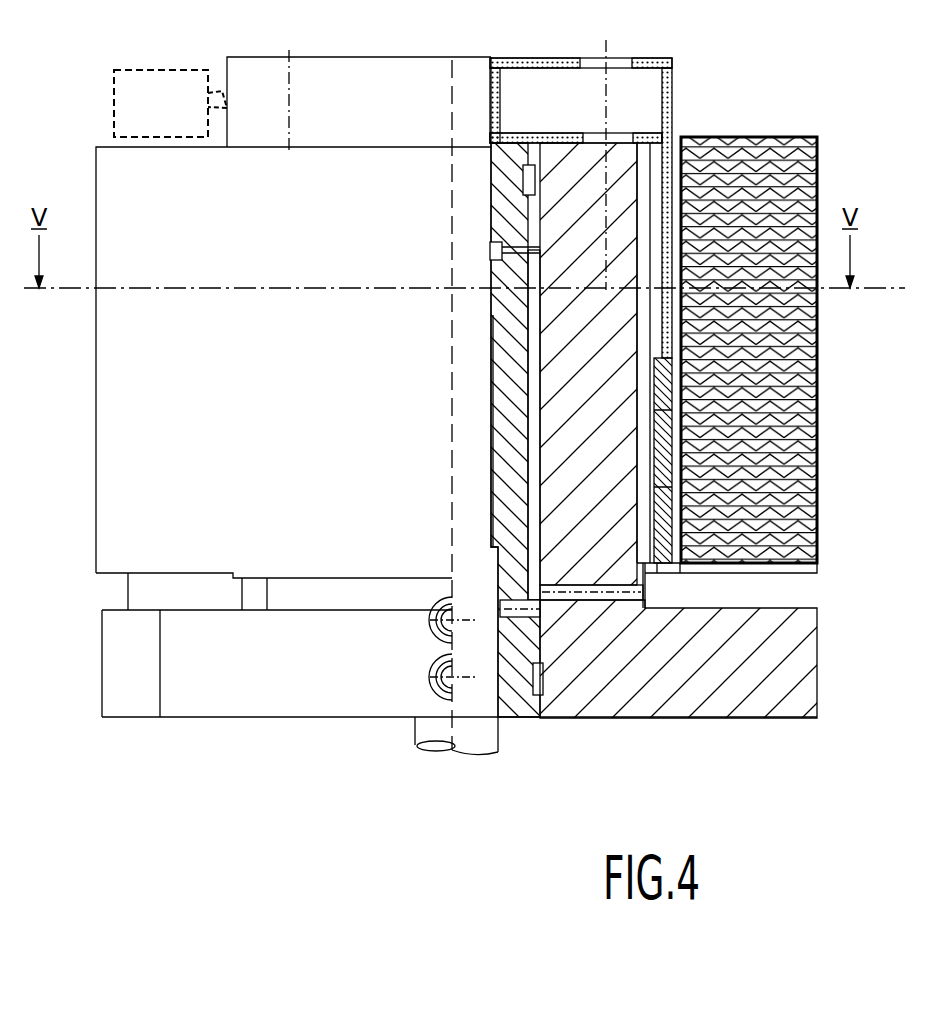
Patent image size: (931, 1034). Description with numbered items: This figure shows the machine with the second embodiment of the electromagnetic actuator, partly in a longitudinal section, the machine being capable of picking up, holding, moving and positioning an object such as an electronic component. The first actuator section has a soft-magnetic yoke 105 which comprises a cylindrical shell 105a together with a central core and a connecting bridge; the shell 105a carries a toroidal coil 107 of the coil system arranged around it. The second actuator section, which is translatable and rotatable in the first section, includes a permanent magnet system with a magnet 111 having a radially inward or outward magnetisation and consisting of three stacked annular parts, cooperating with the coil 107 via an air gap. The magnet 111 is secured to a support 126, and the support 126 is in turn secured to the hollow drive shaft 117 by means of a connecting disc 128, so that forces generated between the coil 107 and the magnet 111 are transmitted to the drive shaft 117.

The soft-magnetic yoke 105 is at (729, 705).
The cylindrical shell 105a is at (764, 514).
The toroidal coil 107 is at (662, 234).
The magnet 111 is at (660, 457).
The drive shaft 117 is at (496, 738).
The support 126 is at (670, 81).
The connecting disc 128 is at (562, 58).